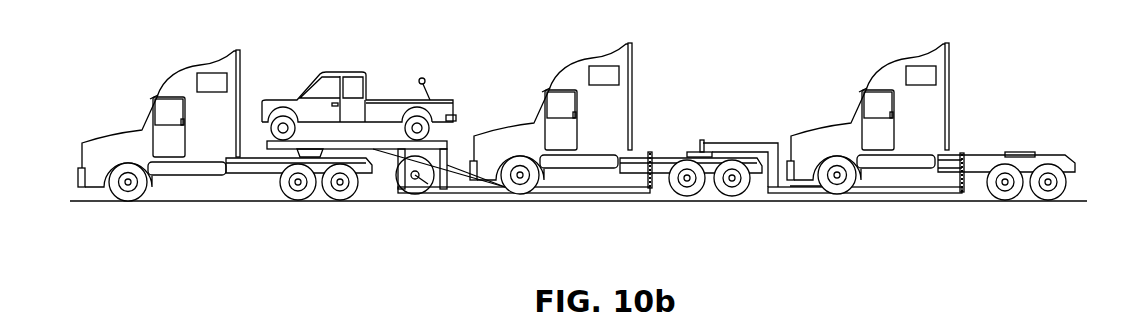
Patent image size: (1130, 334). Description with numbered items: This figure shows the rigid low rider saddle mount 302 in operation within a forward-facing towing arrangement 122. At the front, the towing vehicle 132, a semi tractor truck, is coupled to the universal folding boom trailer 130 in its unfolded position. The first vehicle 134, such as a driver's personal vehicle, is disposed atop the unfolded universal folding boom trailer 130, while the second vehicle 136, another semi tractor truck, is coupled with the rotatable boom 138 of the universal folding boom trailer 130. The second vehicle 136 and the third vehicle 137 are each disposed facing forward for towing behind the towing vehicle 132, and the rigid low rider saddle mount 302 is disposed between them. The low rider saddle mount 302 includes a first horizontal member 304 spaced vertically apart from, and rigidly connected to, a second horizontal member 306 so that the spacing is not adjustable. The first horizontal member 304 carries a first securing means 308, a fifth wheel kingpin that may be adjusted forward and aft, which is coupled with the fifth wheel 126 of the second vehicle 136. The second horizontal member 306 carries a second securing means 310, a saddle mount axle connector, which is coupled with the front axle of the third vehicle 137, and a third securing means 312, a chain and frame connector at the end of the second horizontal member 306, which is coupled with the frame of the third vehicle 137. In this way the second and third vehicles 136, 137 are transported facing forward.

The vehicle convoy system 122 is at (287, 249).
The fifth wheel 126 is at (700, 148).
The universal folding boom trailer 130 is at (459, 154).
The towing vehicle 132 is at (110, 131).
The first vehicle 134 is at (340, 72).
The second vehicle 136 is at (616, 104).
The third vehicle 137 is at (893, 63).
The rotatable boom 138 is at (558, 194).
The low rider saddle mount 302 is at (850, 149).
The first horizontal member 304 is at (748, 142).
The second horizontal member 306 is at (892, 194).
The first securing means 308 is at (702, 140).
The second securing means 310 is at (808, 188).
The third securing means 312 is at (967, 193).